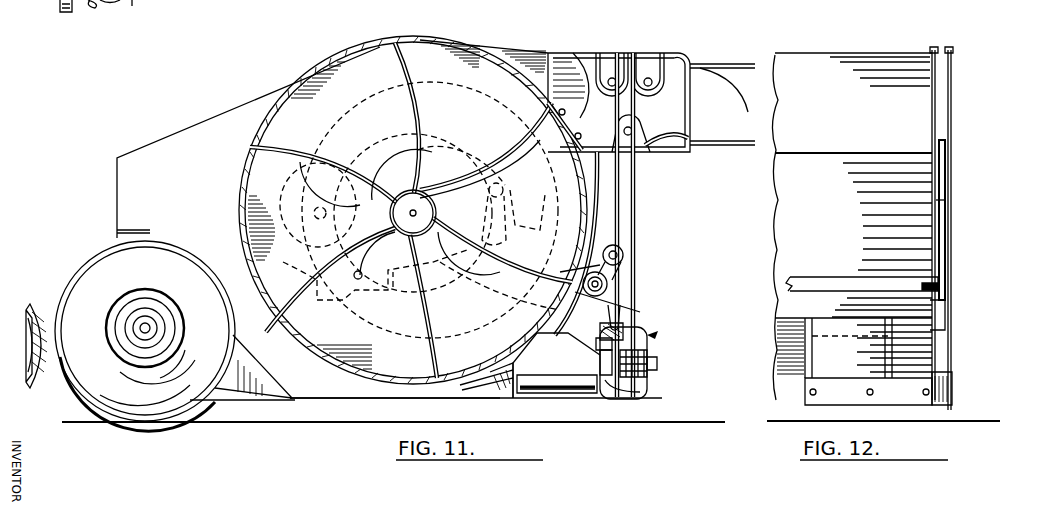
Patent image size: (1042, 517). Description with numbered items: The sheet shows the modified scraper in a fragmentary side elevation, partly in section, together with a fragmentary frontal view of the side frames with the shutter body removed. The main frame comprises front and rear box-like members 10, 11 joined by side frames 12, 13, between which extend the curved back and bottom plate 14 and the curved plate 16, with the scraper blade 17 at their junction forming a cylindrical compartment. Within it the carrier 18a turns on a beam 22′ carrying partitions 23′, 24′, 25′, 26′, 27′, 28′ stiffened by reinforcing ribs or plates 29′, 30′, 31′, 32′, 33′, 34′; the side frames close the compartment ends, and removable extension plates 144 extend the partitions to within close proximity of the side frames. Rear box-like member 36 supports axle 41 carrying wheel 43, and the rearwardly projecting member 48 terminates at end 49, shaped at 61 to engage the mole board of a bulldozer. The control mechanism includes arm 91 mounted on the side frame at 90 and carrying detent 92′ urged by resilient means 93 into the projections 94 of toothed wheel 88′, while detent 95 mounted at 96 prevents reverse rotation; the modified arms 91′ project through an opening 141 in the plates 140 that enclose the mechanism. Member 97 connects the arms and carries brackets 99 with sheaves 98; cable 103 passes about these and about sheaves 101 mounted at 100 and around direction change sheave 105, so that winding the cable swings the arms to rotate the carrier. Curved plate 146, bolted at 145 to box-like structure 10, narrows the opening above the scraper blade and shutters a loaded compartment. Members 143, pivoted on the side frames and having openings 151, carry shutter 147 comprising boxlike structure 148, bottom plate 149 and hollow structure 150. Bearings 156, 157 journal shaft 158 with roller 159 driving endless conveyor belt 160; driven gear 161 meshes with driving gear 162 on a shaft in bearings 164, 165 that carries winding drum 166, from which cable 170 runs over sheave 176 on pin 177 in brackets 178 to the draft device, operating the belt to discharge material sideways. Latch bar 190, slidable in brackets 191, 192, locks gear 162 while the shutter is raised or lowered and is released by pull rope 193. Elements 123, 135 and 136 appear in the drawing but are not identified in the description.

In FIG. 12, the front box like member 10 is at (910, 112).
In FIG. 11, the rear box like member 11 is at (198, 118).
In FIG. 11, the side frame 12 is at (391, 398).
In FIG. 11, the side frame 13 is at (476, 68).
In FIG. 12, the side frame 13 is at (938, 50).
In FIG. 11, the curved back and bottom plate 14 is at (296, 80).
In FIG. 12, the curved back and bottom plate 14 is at (786, 326).
In FIG. 11, the curved plate 16 is at (619, 102).
In FIG. 11, the scraper blade 17 is at (480, 400).
In FIG. 12, the scraper blade 17 is at (906, 399).
In FIG. 11, the carrier 18a is at (414, 74).
In FIG. 11, the beam 22′ is at (404, 190).
In FIG. 12, the beam 22′ is at (860, 360).
In FIG. 11, the partition 23′ is at (436, 349).
In FIG. 11, the partition 24′ is at (574, 268).
In FIG. 11, the partition 25′ is at (540, 112).
In FIG. 11, the partition 26′ is at (405, 70).
In FIG. 11, the partition 27′ is at (296, 152).
In FIG. 11, the partition 28′ is at (300, 300).
In FIG. 11, the reinforcing rib or plate 29′ is at (405, 318).
In FIG. 12, the reinforcing rib or plate 29′ is at (851, 336).
In FIG. 11, the reinforcing rib or plate 30′ is at (502, 272).
In FIG. 11, the reinforcing rib or plate 31′ is at (505, 171).
In FIG. 11, the reinforcing rib or plate 32′ is at (420, 125).
In FIG. 11, the reinforcing rib or plate 33′ is at (350, 160).
In FIG. 11, the reinforcing rib or plate 34′ is at (320, 258).
In FIG. 11, the box like member 36 is at (255, 345).
In FIG. 11, the axle 41 is at (138, 334).
In FIG. 11, the wheel 43 is at (152, 276).
In FIG. 11, the rearwardly projecting member 48 is at (52, 360).
In FIG. 11, the rearmost end 49 is at (33, 305).
In FIG. 11, the curved engaging shape 61 is at (28, 312).
In FIG. 11, the toothed wheel 88′ is at (468, 150).
In FIG. 11, the arm mounting 90 is at (312, 215).
In FIG. 11, the arm 91 is at (345, 118).
In FIG. 11, the arm 91′ is at (608, 298).
In FIG. 12, the arm 91′ is at (945, 150).
In FIG. 11, the detent 92′ is at (462, 282).
In FIG. 11, the resilient means 93 is at (520, 208).
In FIG. 11, the projection 94 is at (485, 214).
In FIG. 11, the detent 95 is at (394, 287).
In FIG. 11, the detent mounting 96 is at (358, 280).
In FIG. 11, the member 97 is at (625, 288).
In FIG. 12, the member 97 is at (822, 280).
In FIG. 11, the sheave 98 is at (640, 268).
In FIG. 11, the bracket 99 is at (630, 278).
In FIG. 11, the sheave mounting 100 is at (612, 78).
In FIG. 11, the sheave 101 is at (598, 53).
In FIG. 11, the cable 103 is at (745, 92).
In FIG. 11, the direction change sheave 105 is at (610, 110).
In FIG. 11, the member 123 is at (132, 6).
In FIG. 12, the bottom plate 135 is at (952, 376).
In FIG. 12, the side wall 136 is at (950, 72).
In FIG. 12, the plate 140 is at (953, 50).
In FIG. 12, the opening 141 is at (940, 312).
In FIG. 11, the shutter arm 143 is at (632, 308).
In FIG. 12, the shutter arm 143 is at (951, 268).
In FIG. 11, the removable extension plate 144 is at (90, 8).
In FIG. 11, the bolt 145 is at (574, 120).
In FIG. 11, the curved plate 146 is at (580, 144).
In FIG. 12, the curved plate 146 is at (822, 219).
In FIG. 11, the shutter 147 is at (656, 335).
In FIG. 11, the boxlike structure 148 is at (650, 398).
In FIG. 11, the bottom plate 149 is at (550, 398).
In FIG. 11, the hollow structure 150 is at (490, 370).
In FIG. 11, the opening 151 is at (563, 358).
In FIG. 11, the bearing 156 is at (500, 398).
In FIG. 11, the bearing 157 is at (604, 398).
In FIG. 11, the shaft 158 is at (512, 398).
In FIG. 11, the roller 159 is at (535, 390).
In FIG. 11, the endless conveyor belt 160 is at (562, 390).
In FIG. 11, the driven gear 161 is at (640, 398).
In FIG. 11, the driving gear 162 is at (602, 368).
In FIG. 11, the bearing 164 is at (600, 352).
In FIG. 11, the bearing 165 is at (657, 376).
In FIG. 11, the winding drum 166 is at (657, 366).
In FIG. 11, the cable 170 is at (734, 64).
In FIG. 11, the sheave 176 is at (656, 92).
In FIG. 11, the pin 177 is at (648, 53).
In FIG. 11, the bracket 178 is at (664, 58).
In FIG. 11, the latch bar 190 is at (622, 318).
In FIG. 11, the bracket 191 is at (413, 210).
In FIG. 11, the bracket 192 is at (640, 342).
In FIG. 11, the pull rope 193 is at (725, 148).